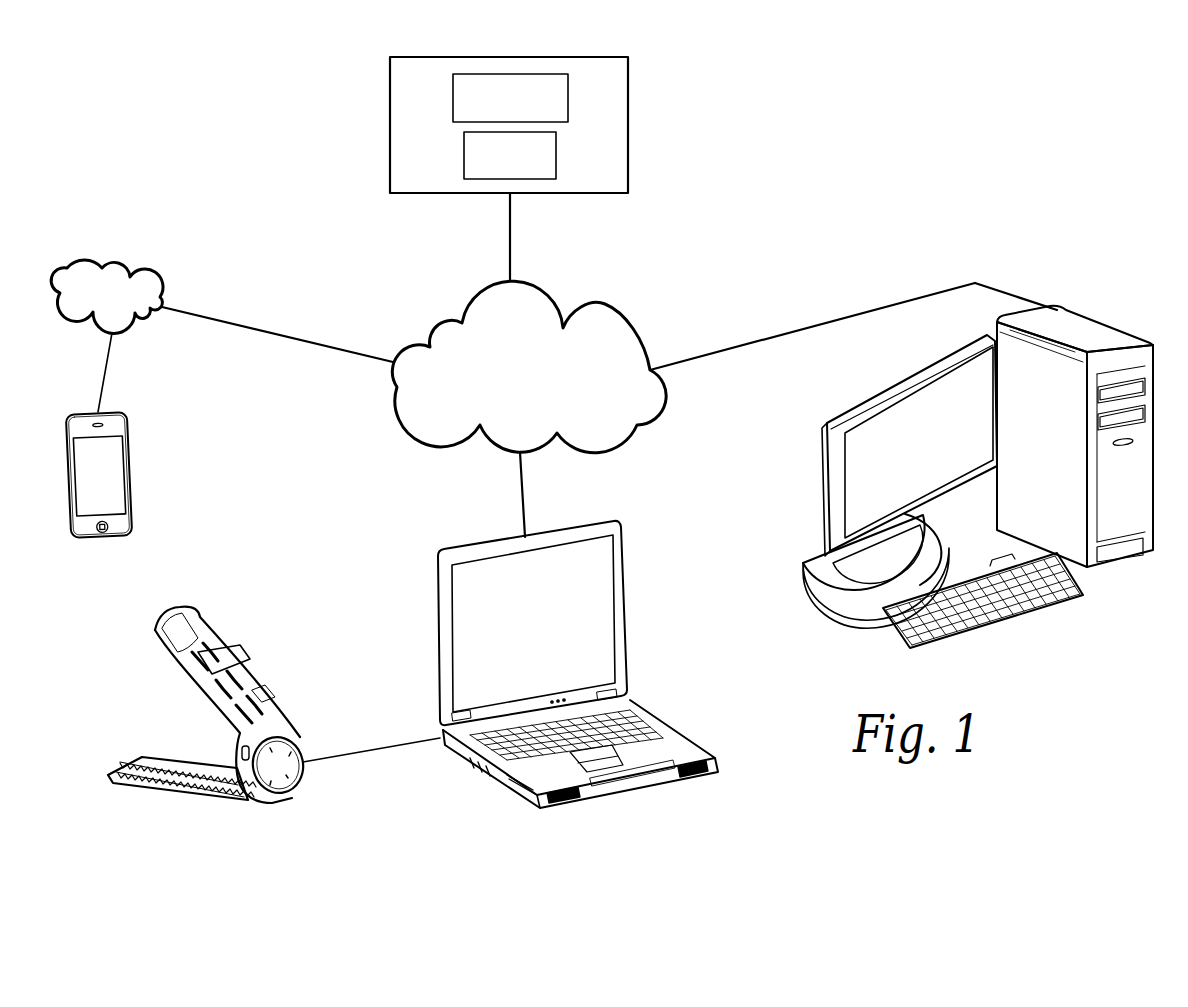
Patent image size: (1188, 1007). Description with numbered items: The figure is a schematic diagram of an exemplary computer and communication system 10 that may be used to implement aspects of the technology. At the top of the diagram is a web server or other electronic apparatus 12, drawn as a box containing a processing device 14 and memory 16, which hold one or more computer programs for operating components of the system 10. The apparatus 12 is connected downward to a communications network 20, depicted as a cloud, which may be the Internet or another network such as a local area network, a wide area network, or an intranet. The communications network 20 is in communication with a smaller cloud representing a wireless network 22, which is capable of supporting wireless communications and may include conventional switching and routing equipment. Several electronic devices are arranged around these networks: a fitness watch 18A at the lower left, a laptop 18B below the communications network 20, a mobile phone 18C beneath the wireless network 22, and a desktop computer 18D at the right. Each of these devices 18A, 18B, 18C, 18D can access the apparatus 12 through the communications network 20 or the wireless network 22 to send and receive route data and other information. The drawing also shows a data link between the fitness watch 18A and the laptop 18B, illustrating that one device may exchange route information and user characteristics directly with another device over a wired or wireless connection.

The computer and communication system 10 is at (968, 97).
The web server or other electronic apparatus 12 is at (390, 100).
The processing device 14 is at (568, 102).
The memory 16 is at (556, 158).
The communications network 20 is at (641, 333).
The wireless network 22 is at (112, 262).
The fitness watch 18A is at (302, 770).
The laptop 18B is at (677, 777).
The electronic device 18C is at (128, 485).
The electronic device 18D is at (1123, 567).